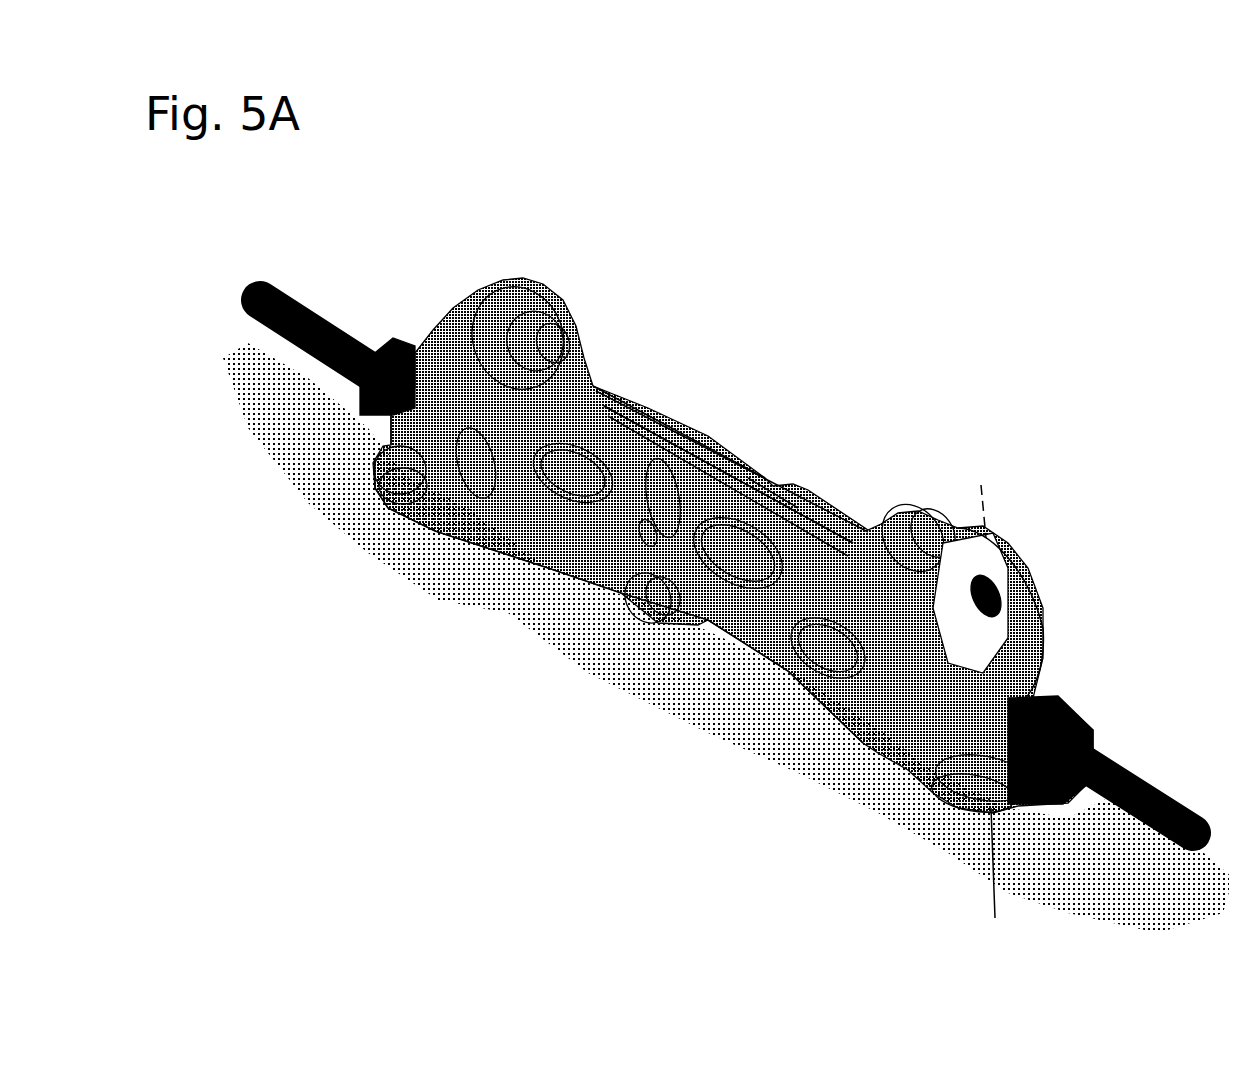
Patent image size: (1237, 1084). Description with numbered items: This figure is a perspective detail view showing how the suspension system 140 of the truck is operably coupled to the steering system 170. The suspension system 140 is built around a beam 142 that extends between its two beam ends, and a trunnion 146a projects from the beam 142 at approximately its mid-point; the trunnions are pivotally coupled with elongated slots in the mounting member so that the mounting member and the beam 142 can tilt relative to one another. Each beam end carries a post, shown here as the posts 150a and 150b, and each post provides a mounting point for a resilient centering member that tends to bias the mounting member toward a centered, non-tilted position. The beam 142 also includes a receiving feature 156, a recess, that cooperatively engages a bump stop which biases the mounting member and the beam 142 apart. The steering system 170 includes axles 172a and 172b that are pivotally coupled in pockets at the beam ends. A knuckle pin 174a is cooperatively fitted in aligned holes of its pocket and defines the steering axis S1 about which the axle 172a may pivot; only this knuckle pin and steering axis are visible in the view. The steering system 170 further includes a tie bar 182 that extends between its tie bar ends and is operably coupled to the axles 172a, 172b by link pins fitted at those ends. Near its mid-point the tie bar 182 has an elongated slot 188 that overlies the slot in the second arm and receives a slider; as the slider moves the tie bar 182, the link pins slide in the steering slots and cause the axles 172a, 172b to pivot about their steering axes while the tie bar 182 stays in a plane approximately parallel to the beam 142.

The suspension system 140 is at (838, 492).
The beam 142 is at (590, 386).
The trunnion 146a is at (650, 590).
The post 150a is at (908, 525).
The post 150b is at (560, 332).
The receiving feature 156 is at (740, 468).
The steering system 170 is at (392, 516).
The axle 172a is at (1068, 702).
The axle 172b is at (352, 406).
The knuckle pin 174a is at (976, 590).
The tie bar 182 is at (668, 416).
The elongated slot 188 is at (635, 520).
The steering axis S1 is at (986, 877).